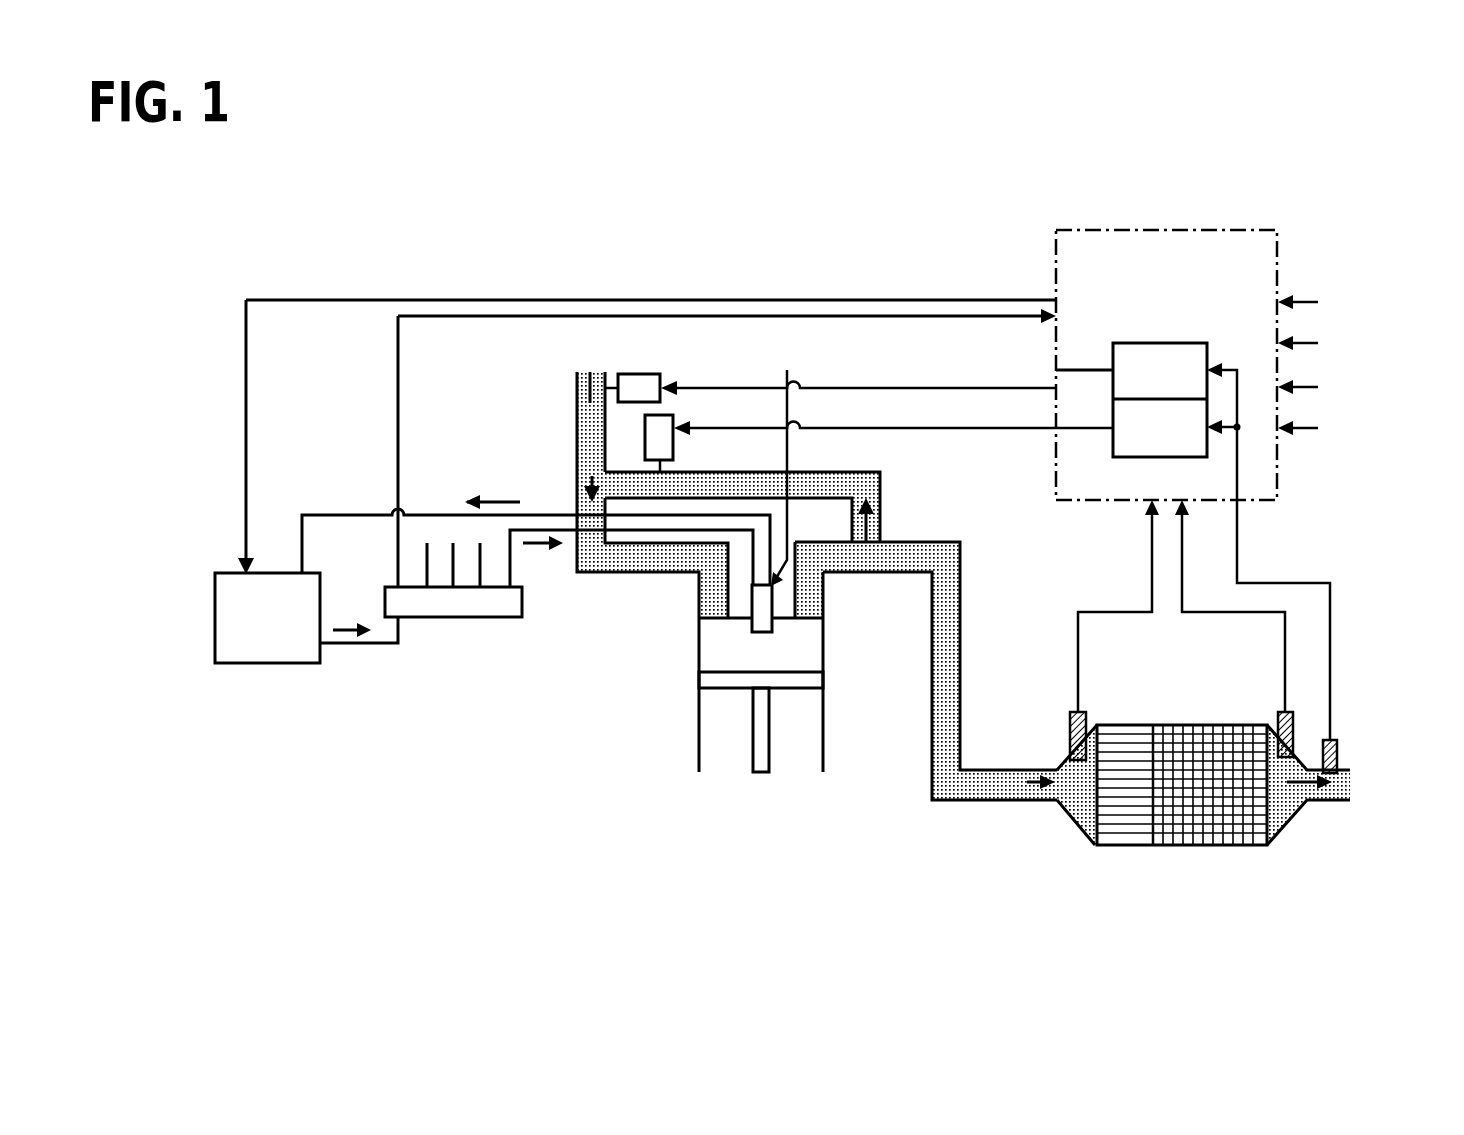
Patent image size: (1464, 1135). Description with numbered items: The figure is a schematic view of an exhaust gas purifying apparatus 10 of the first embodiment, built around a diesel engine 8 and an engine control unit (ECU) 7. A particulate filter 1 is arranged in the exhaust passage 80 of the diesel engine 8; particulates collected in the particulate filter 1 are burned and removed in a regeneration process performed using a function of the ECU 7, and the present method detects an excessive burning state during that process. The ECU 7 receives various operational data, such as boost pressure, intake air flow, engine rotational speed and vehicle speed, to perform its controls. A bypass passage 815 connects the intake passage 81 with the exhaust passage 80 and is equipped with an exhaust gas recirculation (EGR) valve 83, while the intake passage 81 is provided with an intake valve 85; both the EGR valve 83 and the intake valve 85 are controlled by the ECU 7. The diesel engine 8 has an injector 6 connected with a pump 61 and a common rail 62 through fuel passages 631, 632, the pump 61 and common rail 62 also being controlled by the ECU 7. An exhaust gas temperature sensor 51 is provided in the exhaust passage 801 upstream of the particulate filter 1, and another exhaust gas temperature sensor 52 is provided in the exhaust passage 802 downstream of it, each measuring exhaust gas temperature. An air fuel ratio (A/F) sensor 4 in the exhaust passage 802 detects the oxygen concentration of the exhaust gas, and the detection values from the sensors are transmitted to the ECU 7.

The particulate filter 1 is at (1186, 832).
The air fuel ratio (A/F) sensor 4 is at (1338, 757).
The injector 6 is at (763, 607).
The engine control unit (ECU) 7 is at (1150, 230).
The diesel engine 8 is at (683, 728).
The exhaust gas purifying apparatus 10 is at (1286, 540).
The exhaust gas temperature sensor 51 is at (1070, 753).
The exhaust gas temperature sensor 52 is at (1293, 727).
The pump 61 is at (270, 663).
The common rail 62 is at (445, 600).
The exhaust passage 80 is at (930, 743).
The intake passage 81 is at (655, 562).
The exhaust gas recirculation (EGR) valve 83 is at (662, 433).
The intake valve 85 is at (636, 385).
The fuel passage 631 is at (512, 566).
The fuel passage 632 is at (344, 513).
The exhaust passage 801 is at (1000, 800).
The exhaust passage 802 is at (1278, 797).
The bypass passage 815 is at (830, 483).